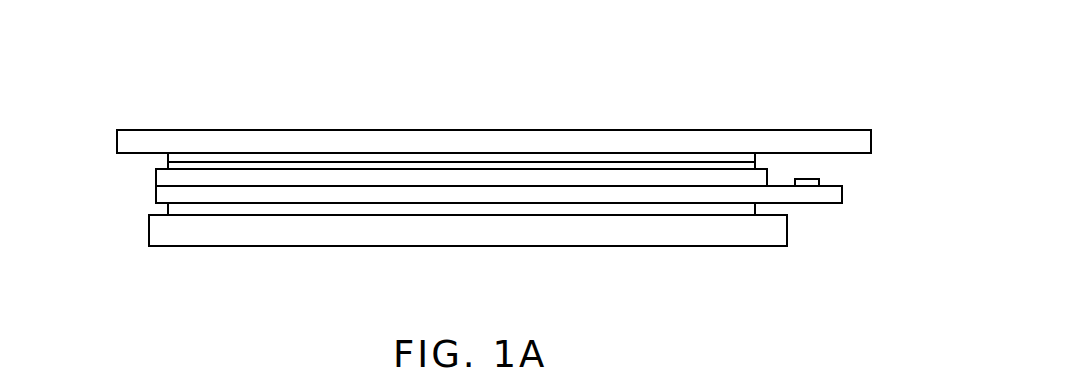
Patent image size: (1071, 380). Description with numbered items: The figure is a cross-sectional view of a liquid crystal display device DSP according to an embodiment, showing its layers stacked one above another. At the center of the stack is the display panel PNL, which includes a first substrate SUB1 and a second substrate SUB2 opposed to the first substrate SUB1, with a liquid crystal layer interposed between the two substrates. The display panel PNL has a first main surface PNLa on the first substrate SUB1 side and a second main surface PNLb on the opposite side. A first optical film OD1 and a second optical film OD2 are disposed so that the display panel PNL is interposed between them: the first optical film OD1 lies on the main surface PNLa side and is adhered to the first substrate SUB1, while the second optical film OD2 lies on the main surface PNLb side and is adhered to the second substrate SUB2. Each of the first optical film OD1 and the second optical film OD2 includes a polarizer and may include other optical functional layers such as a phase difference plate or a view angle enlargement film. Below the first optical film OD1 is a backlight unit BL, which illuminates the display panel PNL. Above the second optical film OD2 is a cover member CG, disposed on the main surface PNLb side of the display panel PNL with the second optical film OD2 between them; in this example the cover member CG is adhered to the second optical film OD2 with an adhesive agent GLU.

The liquid crystal display device DSP is at (712, 72).
The cover member CG is at (132, 143).
The adhesive agent GLU is at (443, 158).
The second optical film OD2 is at (177, 167).
The display panel PNL is at (410, 80).
The first substrate SUB1 is at (274, 195).
The second substrate SUB2 is at (367, 180).
The second main surface PNLb is at (528, 169).
The first main surface PNLa is at (528, 203).
The first optical film OD1 is at (177, 207).
The backlight unit BL is at (157, 234).